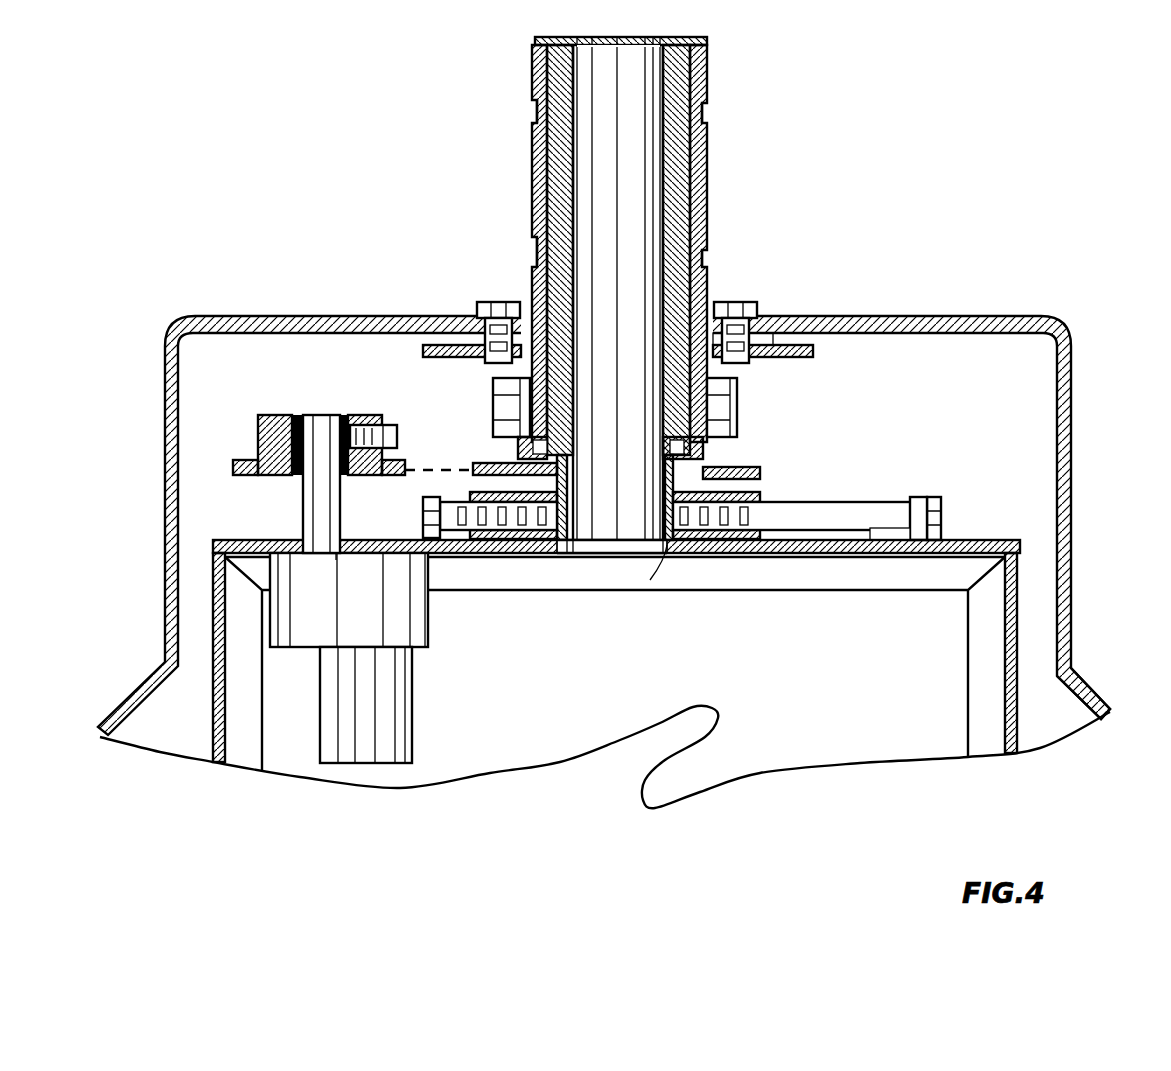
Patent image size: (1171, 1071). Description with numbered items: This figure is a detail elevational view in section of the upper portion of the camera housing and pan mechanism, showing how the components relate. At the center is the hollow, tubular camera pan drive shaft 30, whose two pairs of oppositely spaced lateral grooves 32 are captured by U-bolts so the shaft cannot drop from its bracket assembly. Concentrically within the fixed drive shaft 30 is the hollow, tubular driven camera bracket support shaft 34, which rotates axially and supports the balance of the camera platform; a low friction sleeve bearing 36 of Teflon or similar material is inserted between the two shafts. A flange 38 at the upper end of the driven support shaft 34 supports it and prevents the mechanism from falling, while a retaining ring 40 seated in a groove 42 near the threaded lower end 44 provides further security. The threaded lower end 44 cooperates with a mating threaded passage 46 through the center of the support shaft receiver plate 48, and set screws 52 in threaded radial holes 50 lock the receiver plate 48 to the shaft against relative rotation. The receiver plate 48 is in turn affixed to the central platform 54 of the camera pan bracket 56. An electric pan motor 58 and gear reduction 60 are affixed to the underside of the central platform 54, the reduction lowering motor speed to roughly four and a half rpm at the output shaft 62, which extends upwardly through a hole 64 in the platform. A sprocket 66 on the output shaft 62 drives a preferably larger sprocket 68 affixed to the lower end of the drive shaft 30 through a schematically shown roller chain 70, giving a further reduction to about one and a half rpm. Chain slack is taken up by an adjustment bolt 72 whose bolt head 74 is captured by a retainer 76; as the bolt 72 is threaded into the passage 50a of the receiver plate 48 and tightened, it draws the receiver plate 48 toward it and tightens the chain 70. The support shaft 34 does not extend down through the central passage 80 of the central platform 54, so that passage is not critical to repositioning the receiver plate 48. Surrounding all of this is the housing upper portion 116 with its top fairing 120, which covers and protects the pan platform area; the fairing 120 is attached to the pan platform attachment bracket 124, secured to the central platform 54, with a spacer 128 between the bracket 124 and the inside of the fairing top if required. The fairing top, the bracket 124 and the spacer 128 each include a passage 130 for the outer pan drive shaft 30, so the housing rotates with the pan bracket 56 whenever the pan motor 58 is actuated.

The camera pan drive shaft 30 is at (712, 175).
The lateral grooves 32 is at (536, 112).
The driven camera bracket support shaft 34 is at (636, 236).
The sleeve bearing 36 is at (540, 175).
The flange 38 is at (708, 42).
The retaining ring 40 is at (519, 447).
The groove 42 is at (715, 446).
The threaded lower end 44 is at (760, 485).
The threaded passage 46 is at (638, 507).
The support shaft receiver plate 48 is at (775, 496).
The threaded radial holes 50 is at (503, 555).
The passage 50a is at (705, 545).
The set screws 52 is at (422, 516).
The central platform 54 is at (258, 540).
The camera pan bracket 56 is at (966, 668).
The electric pan motor 58 is at (414, 715).
The gear reduction 60 is at (338, 618).
The output shaft 62 is at (302, 488).
The hole 64 is at (336, 556).
The sprocket 66 is at (280, 415).
The sprocket 68 is at (475, 472).
The roller chain 70 is at (405, 470).
The adjustment bolt 72 is at (866, 548).
The bolt head 74 is at (942, 512).
The retainer 76 is at (916, 497).
The central passage 80 is at (650, 580).
The housing upper portion 116 is at (1100, 708).
The top fairing 120 is at (1072, 412).
The pan platform attachment bracket 124 is at (815, 357).
The spacer 128 is at (775, 339).
The passage 130 is at (496, 368).